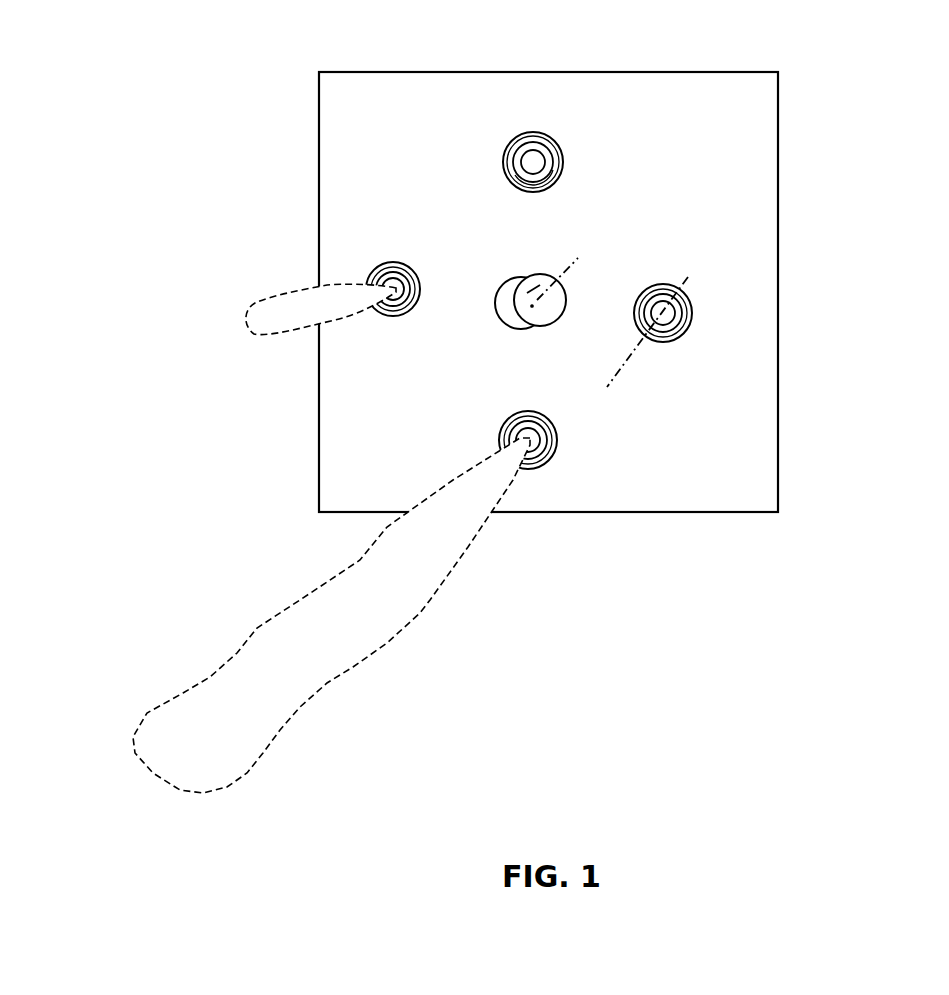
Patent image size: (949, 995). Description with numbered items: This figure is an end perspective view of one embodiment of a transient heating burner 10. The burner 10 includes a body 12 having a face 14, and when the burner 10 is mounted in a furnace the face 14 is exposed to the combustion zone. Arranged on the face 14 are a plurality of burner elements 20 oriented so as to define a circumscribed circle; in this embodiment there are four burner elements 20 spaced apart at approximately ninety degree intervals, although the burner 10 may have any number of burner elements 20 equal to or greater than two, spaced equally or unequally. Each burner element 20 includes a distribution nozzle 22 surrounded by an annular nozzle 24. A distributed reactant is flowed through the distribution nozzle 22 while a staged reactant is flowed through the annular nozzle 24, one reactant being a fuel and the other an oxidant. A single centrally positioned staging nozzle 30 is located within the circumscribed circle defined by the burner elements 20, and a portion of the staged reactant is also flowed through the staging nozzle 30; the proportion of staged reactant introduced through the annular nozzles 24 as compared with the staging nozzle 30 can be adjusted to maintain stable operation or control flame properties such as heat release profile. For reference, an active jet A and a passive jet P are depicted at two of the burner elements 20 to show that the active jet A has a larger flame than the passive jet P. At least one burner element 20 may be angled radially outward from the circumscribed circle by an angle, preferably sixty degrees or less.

The transient heating burner 10 is at (845, 213).
The body 12 is at (752, 400).
The face 14 is at (725, 115).
The burner element 20 is at (692, 298).
The distribution nozzle 22 is at (535, 153).
The annular nozzle 24 is at (513, 148).
The staging nozzle 30 is at (507, 287).
The passive jet P is at (267, 322).
The active jet A is at (442, 548).